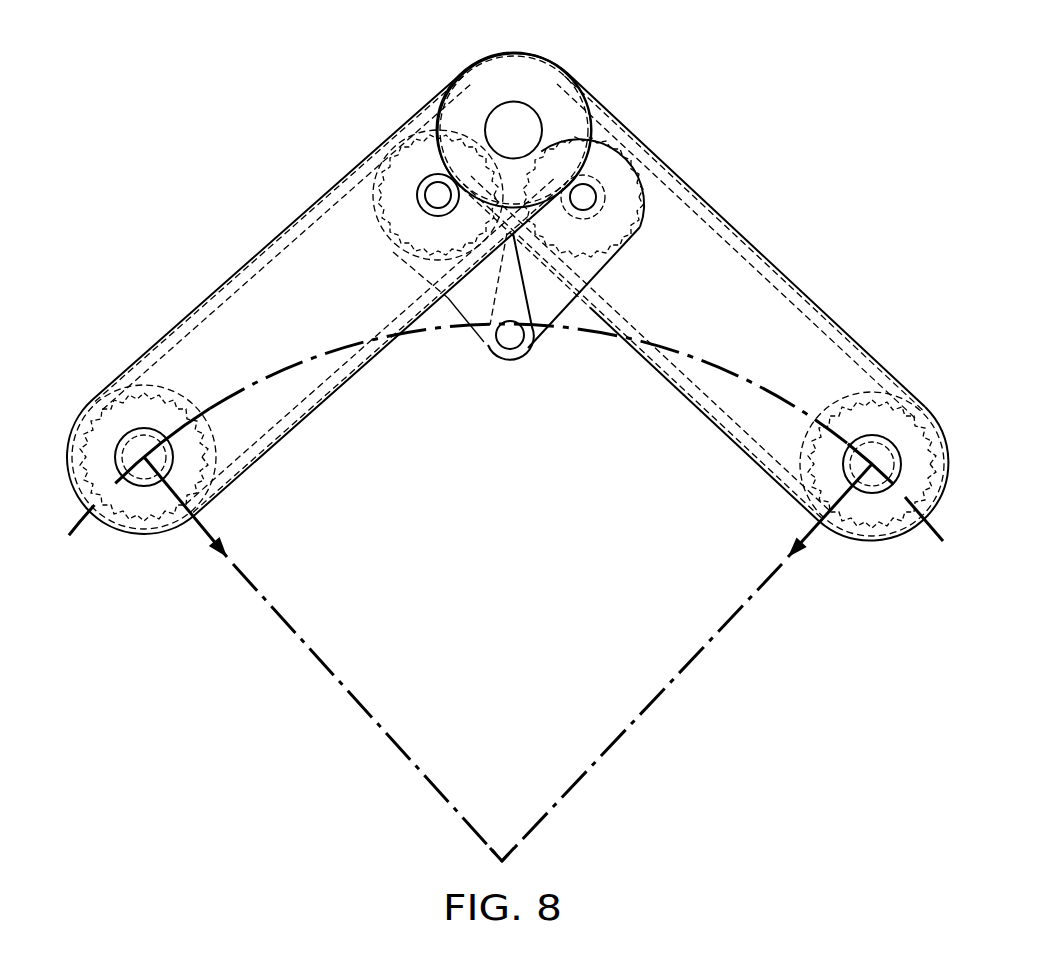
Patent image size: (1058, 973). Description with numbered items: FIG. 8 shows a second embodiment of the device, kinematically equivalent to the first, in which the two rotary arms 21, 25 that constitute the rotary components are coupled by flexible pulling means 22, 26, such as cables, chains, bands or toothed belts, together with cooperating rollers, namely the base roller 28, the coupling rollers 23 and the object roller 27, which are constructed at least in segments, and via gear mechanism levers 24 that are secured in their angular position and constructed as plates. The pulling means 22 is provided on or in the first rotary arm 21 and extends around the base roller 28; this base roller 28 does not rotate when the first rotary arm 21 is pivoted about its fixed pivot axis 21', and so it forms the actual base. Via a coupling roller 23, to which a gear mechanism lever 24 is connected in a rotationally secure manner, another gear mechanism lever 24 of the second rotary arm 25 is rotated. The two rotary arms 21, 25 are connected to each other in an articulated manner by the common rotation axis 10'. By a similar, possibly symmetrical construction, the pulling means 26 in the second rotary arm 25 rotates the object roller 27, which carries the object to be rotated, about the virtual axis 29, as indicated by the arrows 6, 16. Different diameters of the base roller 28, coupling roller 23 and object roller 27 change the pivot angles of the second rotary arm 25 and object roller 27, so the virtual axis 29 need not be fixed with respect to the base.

The common rotation axis 10' is at (525, 108).
The first rotary arm 21 is at (329, 293).
The fixed pivot axis 21' is at (495, 468).
The pulling means 22 is at (295, 232).
The coupling roller 23 is at (412, 150).
The gear mechanism lever 24 is at (461, 300).
The second rotary arm 25 is at (706, 309).
The pulling means 26 is at (727, 237).
The object roller 27 is at (877, 528).
The base roller 28 is at (152, 537).
The arrow 6 is at (204, 538).
The arrow 16 is at (814, 538).
The virtual axis 29 is at (520, 858).